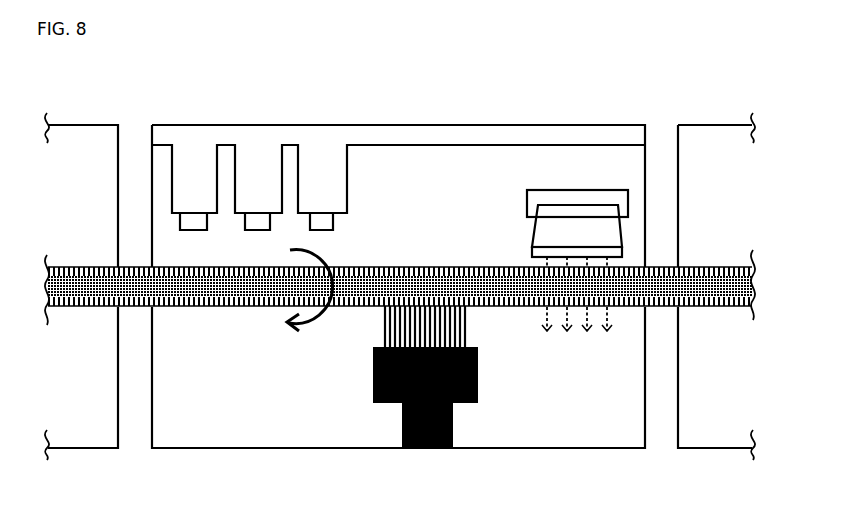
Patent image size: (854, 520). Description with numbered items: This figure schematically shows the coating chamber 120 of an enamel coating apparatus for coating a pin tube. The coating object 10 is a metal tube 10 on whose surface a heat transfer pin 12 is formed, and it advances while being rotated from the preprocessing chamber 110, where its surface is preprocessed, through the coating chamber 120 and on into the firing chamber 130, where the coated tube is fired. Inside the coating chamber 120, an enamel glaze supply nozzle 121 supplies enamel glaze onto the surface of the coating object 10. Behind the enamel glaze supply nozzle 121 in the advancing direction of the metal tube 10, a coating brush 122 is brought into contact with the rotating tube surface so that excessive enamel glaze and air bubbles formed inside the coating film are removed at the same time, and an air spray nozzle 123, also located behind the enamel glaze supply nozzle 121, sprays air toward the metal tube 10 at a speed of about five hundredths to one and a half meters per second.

The coating object 10 is at (93, 290).
The heat transfer pin 12 is at (82, 268).
The preprocessing chamber 110 is at (70, 125).
The coating chamber 120 is at (317, 125).
The enamel glaze supply nozzle 121 is at (257, 231).
The coating brush 122 is at (375, 378).
The air spray nozzle 123 is at (575, 205).
The firing chamber 130 is at (725, 125).